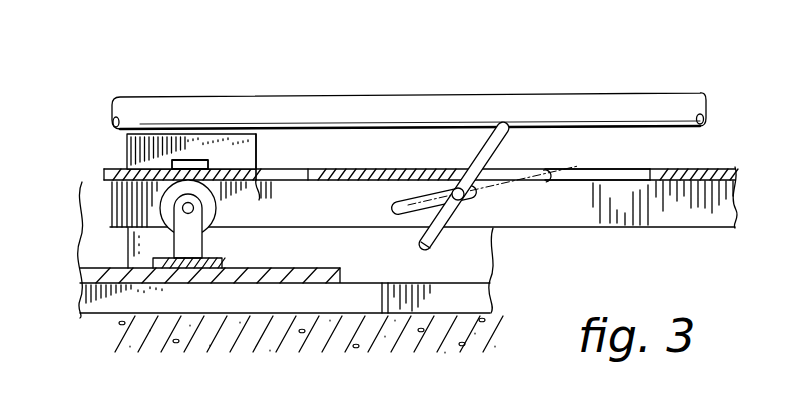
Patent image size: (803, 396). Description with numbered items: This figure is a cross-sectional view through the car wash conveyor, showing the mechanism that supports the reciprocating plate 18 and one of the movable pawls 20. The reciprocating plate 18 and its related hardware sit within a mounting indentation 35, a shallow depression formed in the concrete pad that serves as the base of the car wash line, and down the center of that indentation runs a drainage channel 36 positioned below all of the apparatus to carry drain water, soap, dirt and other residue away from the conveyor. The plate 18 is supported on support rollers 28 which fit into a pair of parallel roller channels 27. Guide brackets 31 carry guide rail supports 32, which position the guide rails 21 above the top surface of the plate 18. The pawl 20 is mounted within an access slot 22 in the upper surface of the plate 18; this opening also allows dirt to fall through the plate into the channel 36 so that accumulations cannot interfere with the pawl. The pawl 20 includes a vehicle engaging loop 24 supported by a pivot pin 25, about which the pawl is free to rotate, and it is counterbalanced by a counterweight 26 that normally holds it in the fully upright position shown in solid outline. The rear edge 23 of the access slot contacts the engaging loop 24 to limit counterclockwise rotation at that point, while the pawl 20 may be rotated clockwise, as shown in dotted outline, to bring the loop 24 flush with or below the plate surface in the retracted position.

The reciprocating plate 18 is at (667, 170).
The movable pawl 20 is at (500, 125).
The guide rail 21 is at (267, 98).
The access slot 22 is at (580, 174).
The rear edge of access slot 23 is at (458, 187).
The vehicle engaging loop 24 is at (500, 167).
The pivot pin 25 is at (493, 241).
The counterweight 26 is at (437, 243).
The roller channel 27 is at (115, 183).
The support roller 28 is at (128, 228).
The guide bracket 31 is at (181, 160).
The guide rail support 32 is at (230, 157).
The mounting indentation 35 is at (83, 184).
The drainage channel 36 is at (312, 291).